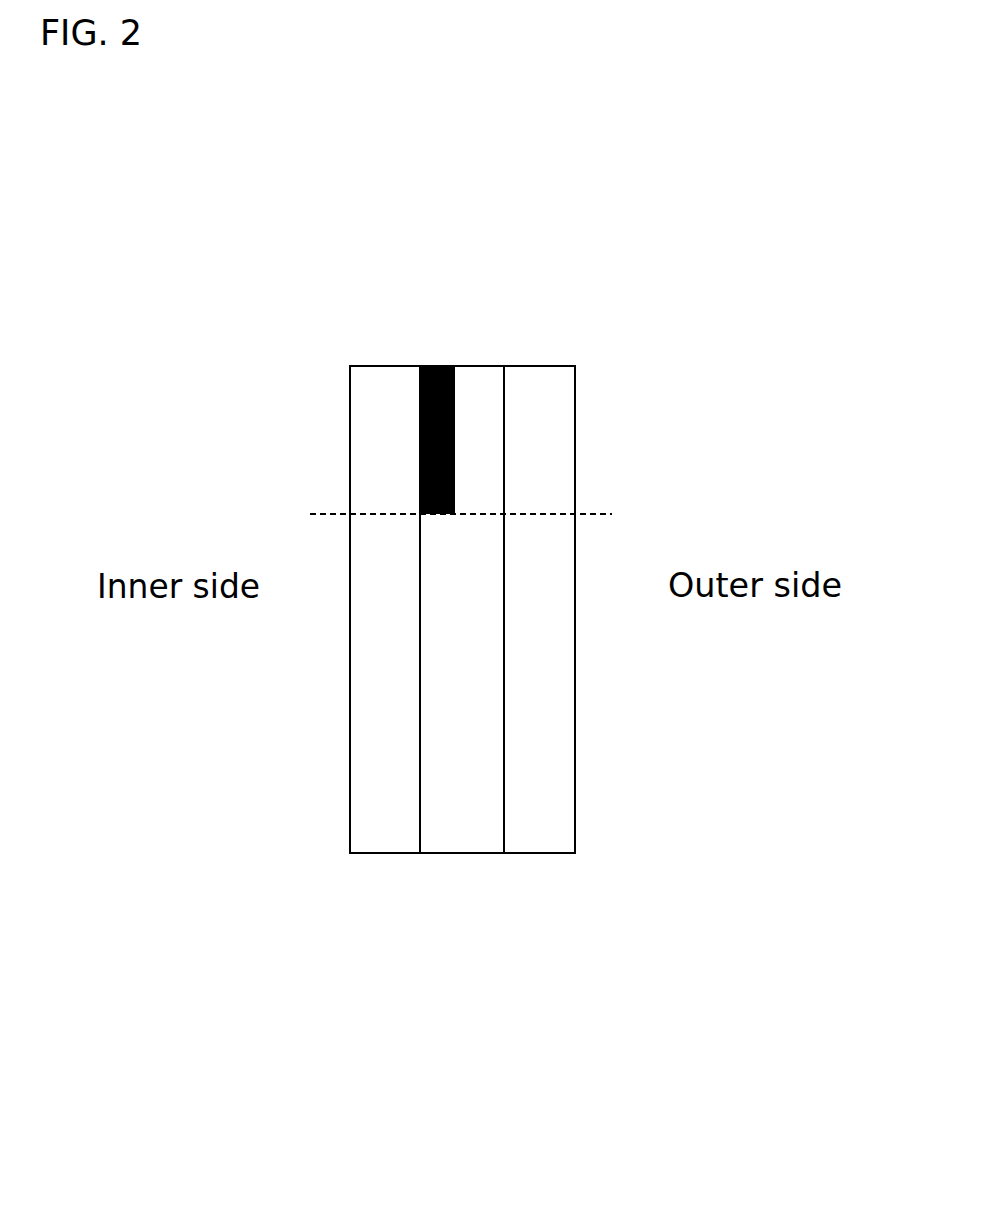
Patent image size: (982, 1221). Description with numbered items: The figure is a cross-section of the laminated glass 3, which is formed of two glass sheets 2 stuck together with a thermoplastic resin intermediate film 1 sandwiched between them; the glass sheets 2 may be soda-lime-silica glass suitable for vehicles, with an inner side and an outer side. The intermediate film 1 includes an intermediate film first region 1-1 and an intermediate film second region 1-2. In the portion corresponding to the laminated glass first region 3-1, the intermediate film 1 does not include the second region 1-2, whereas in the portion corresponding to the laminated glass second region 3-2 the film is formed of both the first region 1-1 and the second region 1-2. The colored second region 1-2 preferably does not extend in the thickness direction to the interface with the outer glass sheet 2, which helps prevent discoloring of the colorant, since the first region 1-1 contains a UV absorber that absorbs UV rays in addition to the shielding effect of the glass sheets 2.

The intermediate film 1 is at (453, 855).
The glass sheet 2 is at (377, 853).
The laminated glass 3 is at (600, 953).
The intermediate film first region 1-1 is at (457, 675).
The intermediate film second region 1-2 is at (437, 365).
The laminated glass first region 3-1 is at (612, 741).
The laminated glass second region 3-2 is at (600, 450).